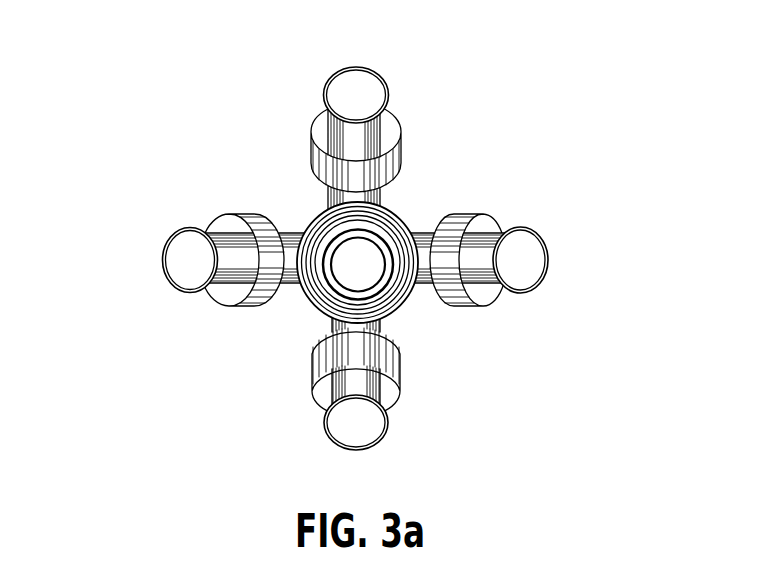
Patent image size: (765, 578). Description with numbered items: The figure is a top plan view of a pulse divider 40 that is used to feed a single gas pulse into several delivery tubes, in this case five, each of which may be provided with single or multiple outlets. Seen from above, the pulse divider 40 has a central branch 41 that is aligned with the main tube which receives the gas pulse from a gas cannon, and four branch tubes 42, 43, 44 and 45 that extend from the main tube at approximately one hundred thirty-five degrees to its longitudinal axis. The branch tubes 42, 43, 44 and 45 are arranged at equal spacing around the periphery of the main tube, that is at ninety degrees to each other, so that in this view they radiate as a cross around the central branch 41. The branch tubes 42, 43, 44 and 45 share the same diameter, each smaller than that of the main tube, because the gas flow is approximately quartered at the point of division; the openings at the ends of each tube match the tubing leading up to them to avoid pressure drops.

The pulse divider 40 is at (354, 266).
The central branch 41 is at (367, 272).
The branch tube 42 is at (358, 86).
The branch tube 43 is at (540, 261).
The branch tube 44 is at (372, 430).
The branch tube 45 is at (175, 264).